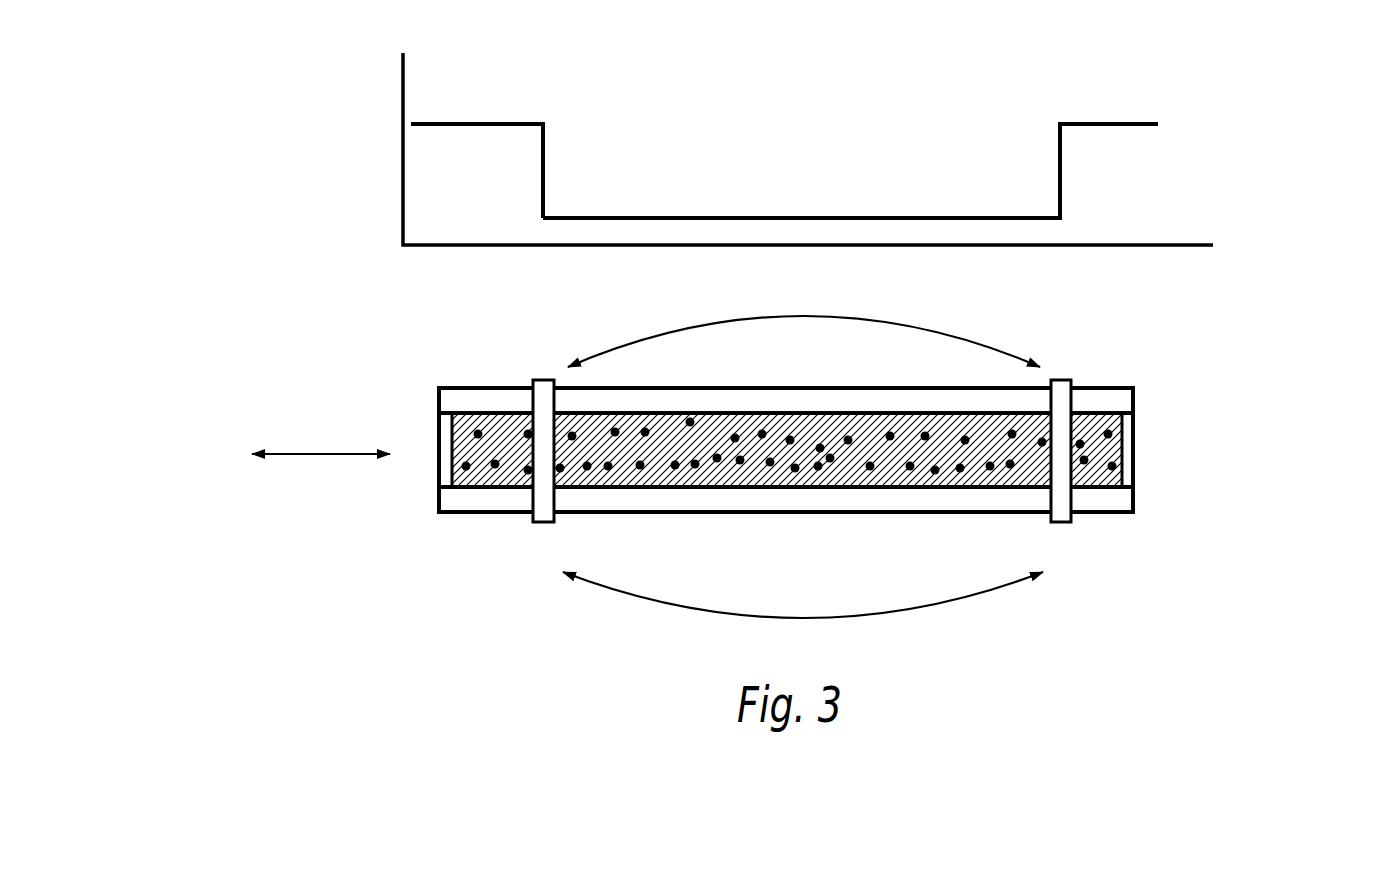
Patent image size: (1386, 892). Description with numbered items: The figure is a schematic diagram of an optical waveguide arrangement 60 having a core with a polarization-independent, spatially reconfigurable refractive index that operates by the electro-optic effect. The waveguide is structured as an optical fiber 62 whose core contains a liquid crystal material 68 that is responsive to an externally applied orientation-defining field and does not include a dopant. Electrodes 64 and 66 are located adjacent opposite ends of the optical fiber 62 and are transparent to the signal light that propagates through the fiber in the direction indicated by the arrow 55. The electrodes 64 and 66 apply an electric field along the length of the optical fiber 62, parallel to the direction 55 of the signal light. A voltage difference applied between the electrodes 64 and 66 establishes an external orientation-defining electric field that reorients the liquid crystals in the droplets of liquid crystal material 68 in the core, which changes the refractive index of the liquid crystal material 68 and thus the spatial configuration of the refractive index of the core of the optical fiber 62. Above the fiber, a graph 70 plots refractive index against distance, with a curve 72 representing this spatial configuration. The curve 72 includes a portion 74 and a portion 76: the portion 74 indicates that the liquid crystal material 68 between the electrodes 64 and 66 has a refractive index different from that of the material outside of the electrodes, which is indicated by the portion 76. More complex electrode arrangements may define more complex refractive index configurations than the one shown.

The electro-optic device arrangement 60 is at (150, 132).
The graph 70 is at (368, 79).
The portion 76 is at (448, 124).
The curve 72 is at (708, 188).
The portion 74 is at (888, 218).
The optical fiber 62 is at (418, 354).
The liquid crystal material 68 is at (508, 488).
The electrode 64 is at (545, 523).
The electrode 66 is at (1060, 523).
The arrow 55 is at (328, 455).